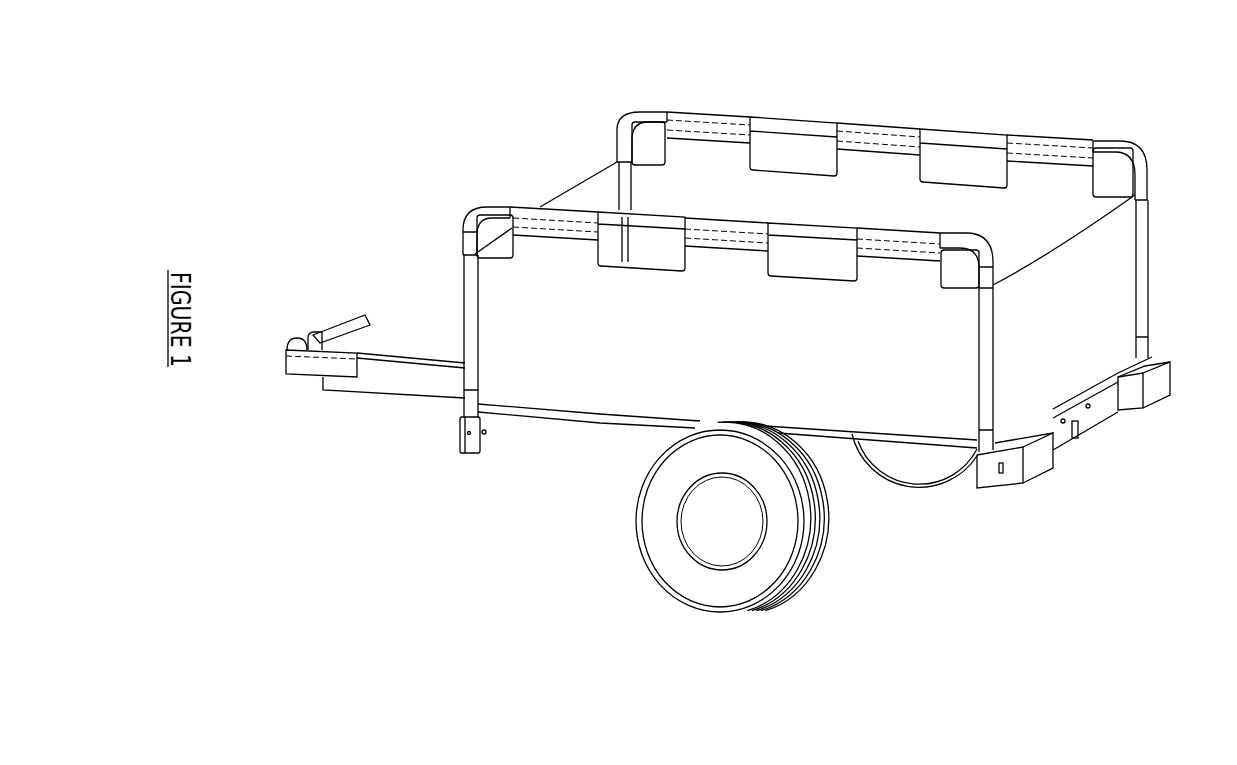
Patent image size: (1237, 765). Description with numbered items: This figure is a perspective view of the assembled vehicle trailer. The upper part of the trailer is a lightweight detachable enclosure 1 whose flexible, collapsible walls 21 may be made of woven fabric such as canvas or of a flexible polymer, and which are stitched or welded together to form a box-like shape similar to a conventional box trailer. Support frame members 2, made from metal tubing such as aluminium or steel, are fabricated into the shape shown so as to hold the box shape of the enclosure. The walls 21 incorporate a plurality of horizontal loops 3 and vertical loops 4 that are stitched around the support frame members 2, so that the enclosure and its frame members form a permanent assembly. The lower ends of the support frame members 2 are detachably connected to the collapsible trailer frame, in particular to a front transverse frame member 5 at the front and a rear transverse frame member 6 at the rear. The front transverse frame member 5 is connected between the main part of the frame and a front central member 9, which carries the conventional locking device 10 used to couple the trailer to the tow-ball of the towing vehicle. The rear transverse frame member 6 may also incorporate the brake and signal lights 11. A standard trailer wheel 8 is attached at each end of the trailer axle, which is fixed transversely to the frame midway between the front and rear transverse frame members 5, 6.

The lightweight detachable enclosure 1 is at (728, 336).
The support frame members 2 is at (801, 197).
The horizontal loops 3 is at (882, 130).
The vertical loops 4 is at (1177, 279).
The front transverse frame member 5 is at (511, 452).
The rear transverse frame member 6 is at (1112, 420).
The trailer wheel 8 is at (773, 517).
The front central member 9 is at (375, 407).
The locking device 10 is at (294, 319).
The brake and signal lights 11 is at (1107, 446).
The flexible, collapsible walls 21 is at (854, 319).